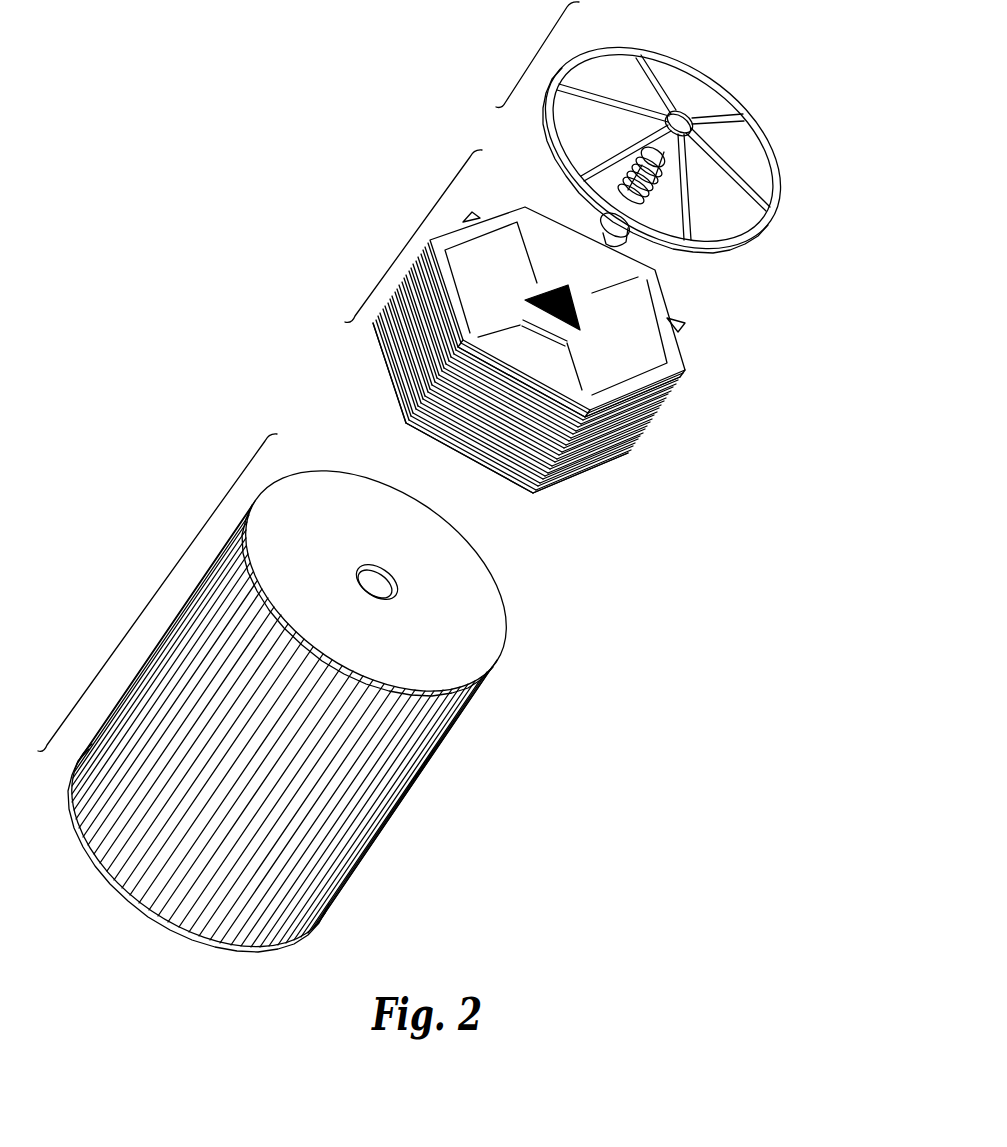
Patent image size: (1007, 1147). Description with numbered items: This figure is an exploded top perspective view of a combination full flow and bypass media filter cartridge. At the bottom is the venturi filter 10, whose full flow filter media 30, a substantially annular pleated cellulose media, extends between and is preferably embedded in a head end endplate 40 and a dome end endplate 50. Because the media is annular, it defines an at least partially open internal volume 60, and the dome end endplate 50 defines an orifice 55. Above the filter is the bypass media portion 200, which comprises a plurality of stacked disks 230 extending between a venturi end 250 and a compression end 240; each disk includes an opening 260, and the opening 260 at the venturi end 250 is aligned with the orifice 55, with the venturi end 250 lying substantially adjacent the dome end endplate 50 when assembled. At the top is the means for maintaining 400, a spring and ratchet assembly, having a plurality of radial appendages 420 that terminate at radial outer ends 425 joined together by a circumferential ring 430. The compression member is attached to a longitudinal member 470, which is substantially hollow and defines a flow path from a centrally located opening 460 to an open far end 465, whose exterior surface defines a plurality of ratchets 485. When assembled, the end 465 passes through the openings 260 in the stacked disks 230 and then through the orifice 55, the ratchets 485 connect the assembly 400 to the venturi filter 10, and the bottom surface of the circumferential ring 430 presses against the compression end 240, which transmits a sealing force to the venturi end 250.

The venturi filter 10 is at (163, 590).
The full flow filter media 30 is at (387, 818).
The head end endplate 40 is at (270, 943).
The dome end endplate 50 is at (502, 650).
The orifice 55 is at (398, 585).
The internal volume 60 is at (370, 573).
The bypass media portion 200 is at (416, 233).
The stacked disks 230 is at (660, 415).
The compression end 240 is at (667, 353).
The venturi end 250 is at (553, 493).
The opening 260 is at (545, 288).
The means for maintaining 400 is at (548, 34).
The radial appendages 420 is at (660, 80).
The radial outer ends 425 is at (738, 115).
The circumferential ring 430 is at (760, 132).
The opening 460 is at (686, 114).
The open far end 465 is at (620, 245).
The longitudinal member 470 is at (643, 150).
The ratchets 485 is at (653, 200).